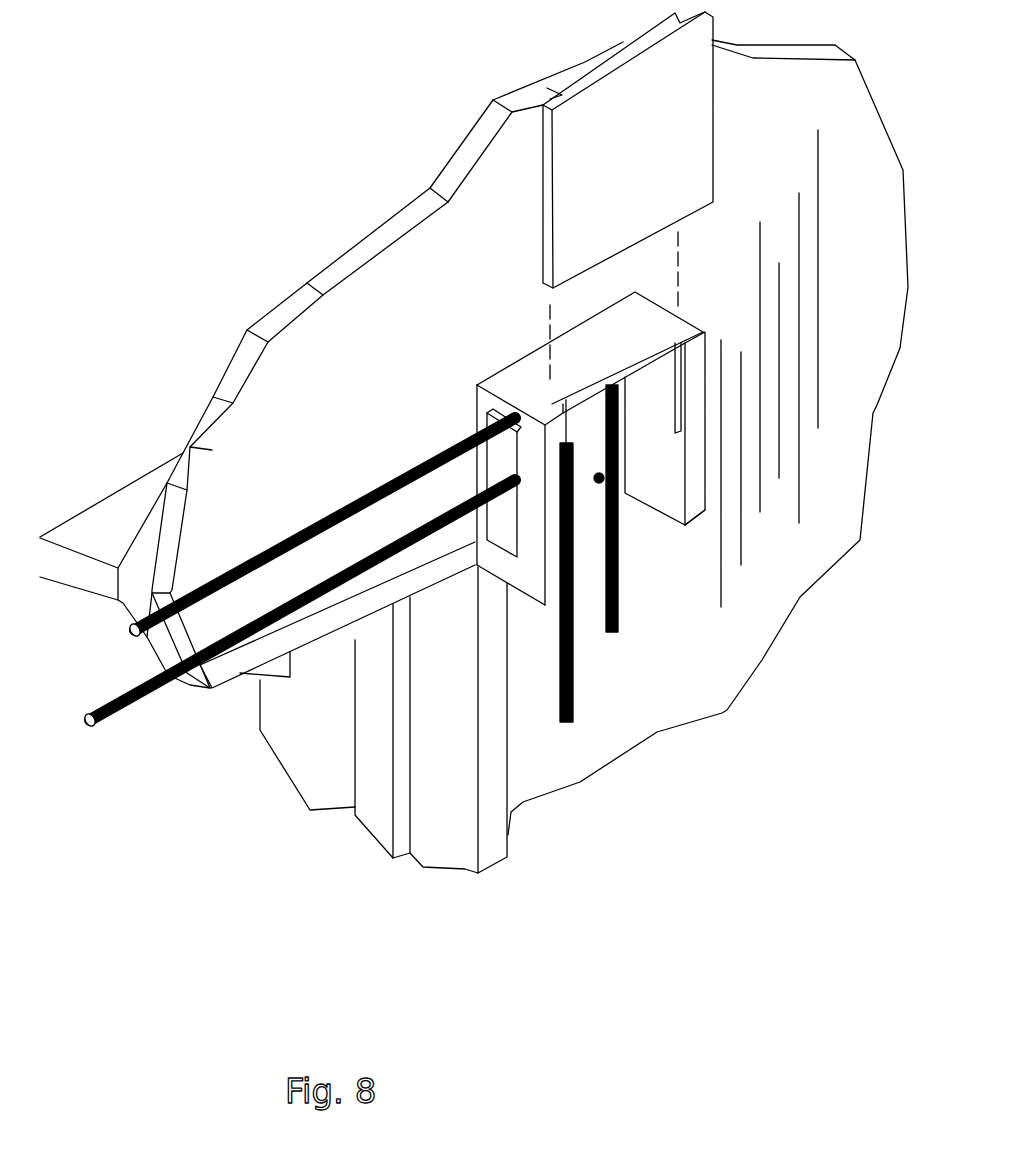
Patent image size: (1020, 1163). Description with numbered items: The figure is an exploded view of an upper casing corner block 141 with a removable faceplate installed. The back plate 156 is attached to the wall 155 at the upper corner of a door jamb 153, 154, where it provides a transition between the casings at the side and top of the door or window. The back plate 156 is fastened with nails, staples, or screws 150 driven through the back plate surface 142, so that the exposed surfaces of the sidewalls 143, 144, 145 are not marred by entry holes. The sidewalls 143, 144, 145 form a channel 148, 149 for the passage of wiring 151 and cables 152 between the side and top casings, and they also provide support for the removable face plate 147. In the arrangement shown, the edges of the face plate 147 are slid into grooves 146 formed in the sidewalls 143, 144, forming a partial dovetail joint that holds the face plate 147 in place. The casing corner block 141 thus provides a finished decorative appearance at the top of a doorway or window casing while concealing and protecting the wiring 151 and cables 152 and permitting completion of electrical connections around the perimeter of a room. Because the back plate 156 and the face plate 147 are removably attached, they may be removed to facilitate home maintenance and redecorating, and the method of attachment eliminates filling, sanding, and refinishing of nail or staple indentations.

The upper casing corner block 141 is at (123, 978).
The back plate surface 142 is at (578, 428).
The sidewall 143 is at (545, 605).
The sidewall 144 is at (537, 360).
The sidewall 145 is at (705, 514).
The grooves 146 is at (550, 410).
The removable face plate 147 is at (668, 189).
The channel 148 is at (495, 567).
The channel 149 is at (601, 484).
The screws 150 is at (619, 535).
The wiring 151 is at (378, 486).
The cables 152 is at (360, 543).
The door jamb 153 is at (463, 870).
The door jamb 154 is at (340, 650).
The wall 155 is at (727, 651).
The back plate 156 is at (480, 400).